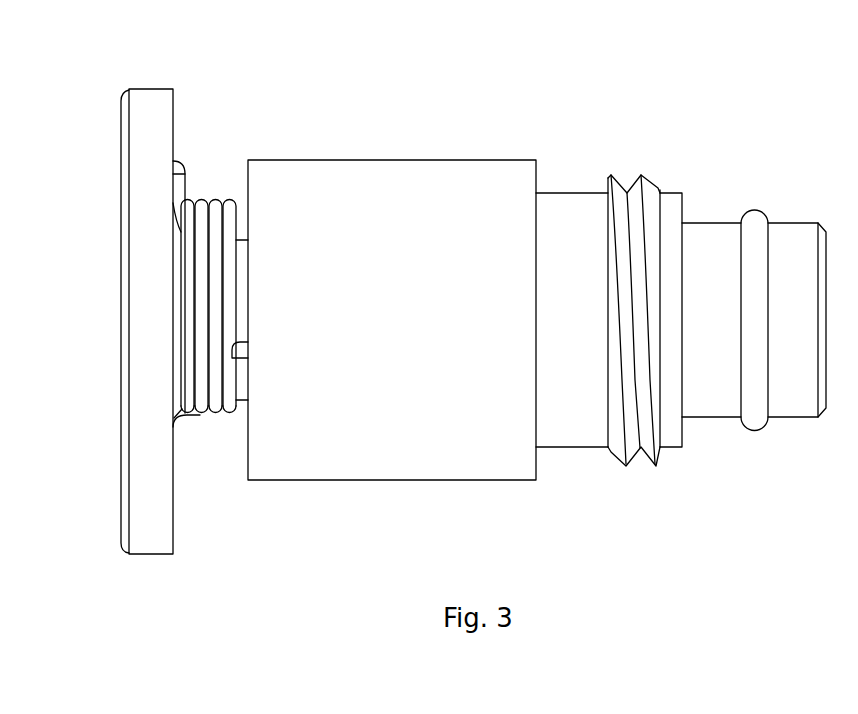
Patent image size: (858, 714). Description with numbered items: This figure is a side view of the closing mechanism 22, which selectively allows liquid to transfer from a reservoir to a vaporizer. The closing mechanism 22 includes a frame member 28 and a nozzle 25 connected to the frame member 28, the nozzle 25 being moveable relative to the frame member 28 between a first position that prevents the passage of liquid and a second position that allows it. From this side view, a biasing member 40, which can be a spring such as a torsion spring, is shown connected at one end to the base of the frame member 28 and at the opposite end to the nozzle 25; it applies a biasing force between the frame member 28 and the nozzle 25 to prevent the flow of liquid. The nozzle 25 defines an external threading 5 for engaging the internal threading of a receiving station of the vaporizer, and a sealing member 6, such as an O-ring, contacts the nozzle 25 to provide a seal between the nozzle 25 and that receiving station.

The closing mechanism 22 is at (515, 118).
The nozzle 25 is at (382, 158).
The frame member 28 is at (143, 88).
The biasing member 40 is at (212, 200).
The external threading 5 is at (642, 175).
The sealing member 6 is at (753, 210).